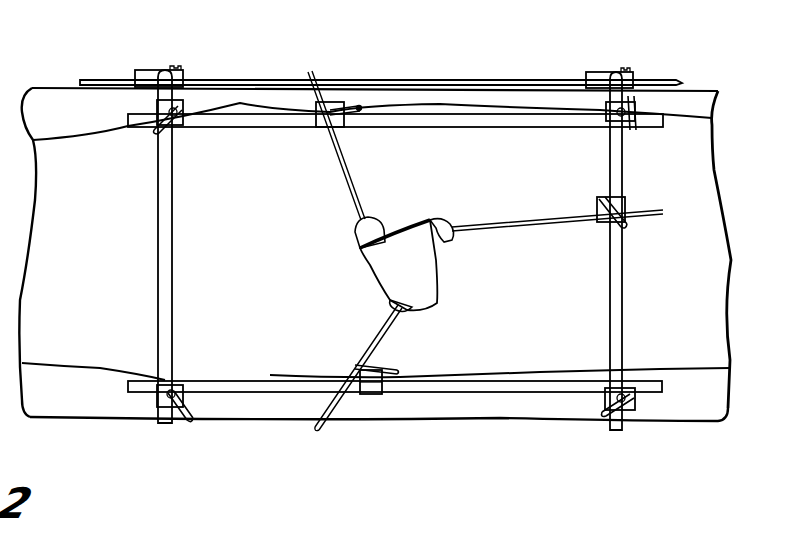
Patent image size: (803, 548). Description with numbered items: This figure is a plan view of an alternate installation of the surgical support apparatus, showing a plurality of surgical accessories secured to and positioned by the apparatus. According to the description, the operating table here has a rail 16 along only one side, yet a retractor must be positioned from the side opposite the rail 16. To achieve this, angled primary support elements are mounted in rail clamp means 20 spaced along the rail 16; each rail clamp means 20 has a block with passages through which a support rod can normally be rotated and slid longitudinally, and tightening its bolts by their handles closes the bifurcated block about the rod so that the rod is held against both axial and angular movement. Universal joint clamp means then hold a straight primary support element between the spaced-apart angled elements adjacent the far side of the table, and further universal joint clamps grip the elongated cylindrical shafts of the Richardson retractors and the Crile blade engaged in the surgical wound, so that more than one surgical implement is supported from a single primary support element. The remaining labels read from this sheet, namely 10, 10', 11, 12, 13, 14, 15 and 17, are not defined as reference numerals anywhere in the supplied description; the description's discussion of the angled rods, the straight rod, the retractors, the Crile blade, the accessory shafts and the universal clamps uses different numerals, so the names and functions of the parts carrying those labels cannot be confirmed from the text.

The vertical side bar 10 is at (424, 234).
The horizontal cross rail 10' is at (395, 279).
The guide pod 11 is at (448, 242).
The guide pod 12 is at (362, 233).
The triangular frame 13 is at (412, 269).
The adjusting rod 14 is at (350, 176).
The clamp 15 is at (180, 128).
The rail 16 is at (487, 80).
The rail slot 17 is at (250, 88).
The rail clamp means 20 is at (148, 70).